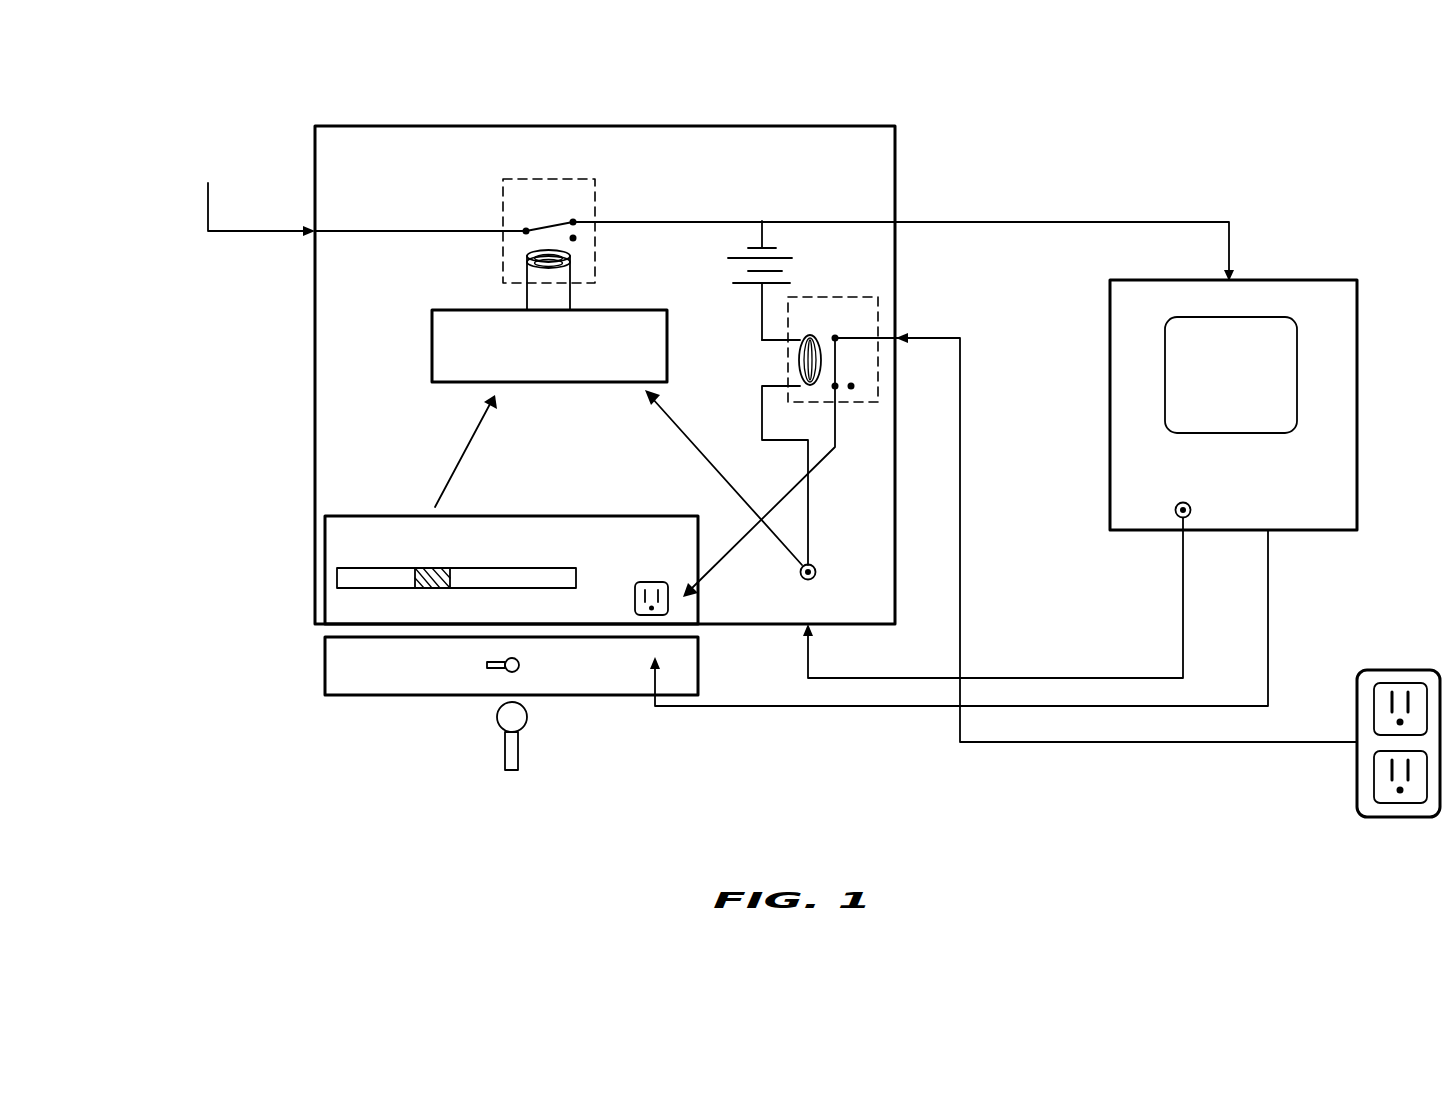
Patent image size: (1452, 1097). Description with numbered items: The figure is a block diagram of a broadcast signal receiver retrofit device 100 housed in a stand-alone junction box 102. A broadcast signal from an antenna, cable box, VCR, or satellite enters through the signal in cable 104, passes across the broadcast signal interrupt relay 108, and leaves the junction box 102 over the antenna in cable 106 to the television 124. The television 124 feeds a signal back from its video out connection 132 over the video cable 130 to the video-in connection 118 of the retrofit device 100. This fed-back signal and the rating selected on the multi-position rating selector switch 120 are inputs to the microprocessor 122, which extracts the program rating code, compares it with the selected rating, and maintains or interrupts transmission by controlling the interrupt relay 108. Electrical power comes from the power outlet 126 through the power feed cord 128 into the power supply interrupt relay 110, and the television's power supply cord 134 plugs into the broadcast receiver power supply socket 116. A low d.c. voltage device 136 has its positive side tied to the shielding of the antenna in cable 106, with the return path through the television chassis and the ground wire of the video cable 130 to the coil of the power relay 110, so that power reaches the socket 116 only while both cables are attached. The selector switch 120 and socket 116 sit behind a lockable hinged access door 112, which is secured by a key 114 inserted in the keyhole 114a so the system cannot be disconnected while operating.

The retrofit device 100 is at (845, 79).
The junction box 102 is at (896, 168).
The signal in cable 104 is at (258, 232).
The antenna in cable 106 is at (1230, 246).
The broadcast signal interrupt relay 108 is at (596, 181).
The power supply interrupt relay 110 is at (880, 312).
The access door 112 is at (700, 665).
The key 114 is at (503, 757).
The keyhole 114a is at (478, 664).
The broadcast receiver power supply socket 116 is at (700, 607).
The video-in connection 118 is at (816, 569).
The signal blocking selector switch 120 is at (323, 560).
The microprocessor 122 is at (620, 302).
The television 124 is at (1358, 397).
The power outlet 126 is at (1385, 820).
The power feed cord 128 is at (963, 425).
The video cable 130 is at (1075, 670).
The video out connection 132 is at (1187, 519).
The power supply cord 134 is at (733, 708).
The low d.c. voltage device 136 is at (798, 266).